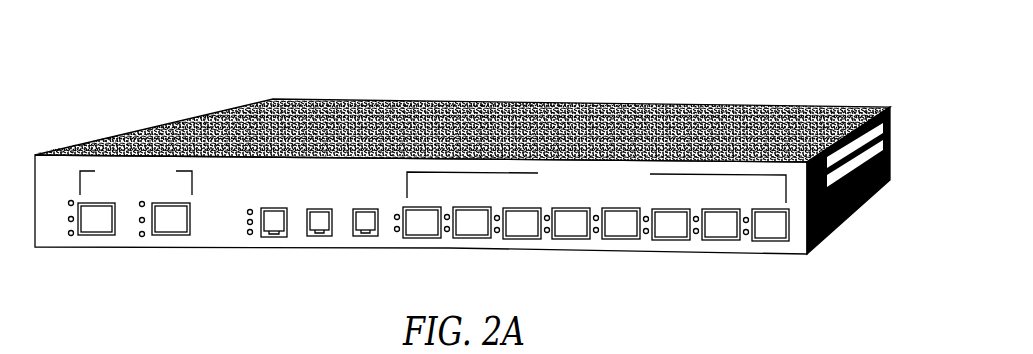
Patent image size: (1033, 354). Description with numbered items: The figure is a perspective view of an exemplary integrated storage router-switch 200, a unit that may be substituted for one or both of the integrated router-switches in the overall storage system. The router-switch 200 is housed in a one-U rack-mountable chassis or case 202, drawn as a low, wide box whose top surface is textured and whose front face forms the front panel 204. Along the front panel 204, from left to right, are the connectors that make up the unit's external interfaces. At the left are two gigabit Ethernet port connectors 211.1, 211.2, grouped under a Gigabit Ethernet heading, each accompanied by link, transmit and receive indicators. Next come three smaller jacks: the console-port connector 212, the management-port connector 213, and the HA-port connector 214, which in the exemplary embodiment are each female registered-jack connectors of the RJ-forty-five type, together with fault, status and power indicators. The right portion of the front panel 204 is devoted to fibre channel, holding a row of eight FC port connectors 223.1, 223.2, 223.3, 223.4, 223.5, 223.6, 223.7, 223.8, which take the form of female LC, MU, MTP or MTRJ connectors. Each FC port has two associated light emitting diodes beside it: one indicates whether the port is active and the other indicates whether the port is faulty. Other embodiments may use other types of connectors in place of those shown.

The integrated storage router-switch 200 is at (812, 132).
The chassis 202 is at (462, 116).
The front panel 204 is at (421, 173).
The GE port connector 211.1 is at (75, 235).
The GE port connector 211.2 is at (151, 235).
The console-port connector 212 is at (257, 238).
The management-port connector 213 is at (300, 246).
The HA-port connector 214 is at (350, 249).
The FC port connector 223.1 is at (433, 230).
The FC port connector 223.2 is at (491, 238).
The FC port connector 223.3 is at (532, 230).
The FC port connector 223.4 is at (590, 238).
The FC port connector 223.5 is at (632, 230).
The FC port connector 223.6 is at (692, 239).
The FC port connector 223.7 is at (731, 231).
The FC port connector 223.8 is at (783, 239).